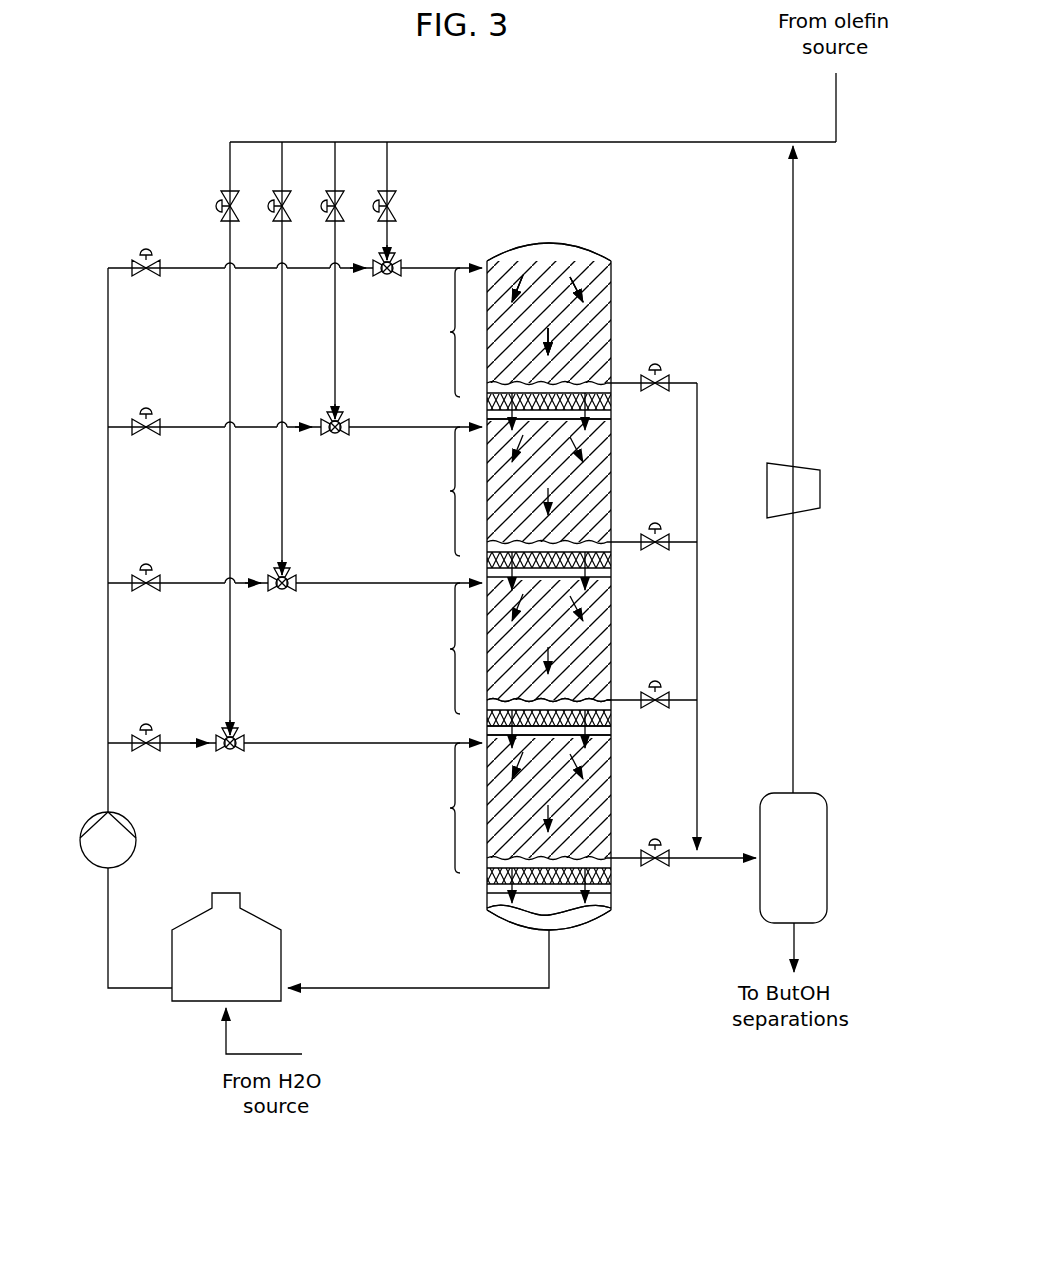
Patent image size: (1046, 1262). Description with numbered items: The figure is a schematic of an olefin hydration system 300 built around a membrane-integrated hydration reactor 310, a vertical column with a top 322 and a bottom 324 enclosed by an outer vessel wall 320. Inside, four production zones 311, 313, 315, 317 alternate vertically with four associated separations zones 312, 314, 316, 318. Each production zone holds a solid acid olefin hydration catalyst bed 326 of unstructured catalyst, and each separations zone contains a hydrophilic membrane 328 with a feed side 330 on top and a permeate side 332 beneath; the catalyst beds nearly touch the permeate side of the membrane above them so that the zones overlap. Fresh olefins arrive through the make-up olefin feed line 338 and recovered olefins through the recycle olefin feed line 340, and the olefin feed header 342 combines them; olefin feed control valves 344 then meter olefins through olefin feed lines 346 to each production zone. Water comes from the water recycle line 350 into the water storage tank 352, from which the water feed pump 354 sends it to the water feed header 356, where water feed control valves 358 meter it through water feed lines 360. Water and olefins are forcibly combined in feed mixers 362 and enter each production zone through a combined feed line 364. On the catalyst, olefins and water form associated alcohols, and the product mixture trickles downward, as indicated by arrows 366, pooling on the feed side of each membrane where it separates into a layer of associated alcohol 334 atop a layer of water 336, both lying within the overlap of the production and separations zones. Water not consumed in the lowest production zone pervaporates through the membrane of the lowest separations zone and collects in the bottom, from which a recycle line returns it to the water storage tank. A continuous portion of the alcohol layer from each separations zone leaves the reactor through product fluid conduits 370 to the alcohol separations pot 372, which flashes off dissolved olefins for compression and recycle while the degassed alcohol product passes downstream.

The olefin hydration system 300 is at (630, 1012).
The membrane-integrated hydration reactor 310 is at (636, 254).
The production zone 311 is at (450, 332).
The separations zone 312 is at (615, 390).
The production zone 313 is at (450, 491).
The separations zone 314 is at (615, 549).
The production zone 315 is at (450, 649).
The separations zone 316 is at (615, 707).
The production zone 317 is at (450, 808).
The separations zone 318 is at (615, 865).
The outer vessel wall 320 is at (487, 912).
The top 322 is at (563, 247).
The bottom 324 is at (598, 928).
The solid acid olefin hydration catalyst bed 326 is at (590, 640).
The hydrophilic membrane 328 is at (487, 724).
The feed side 330 is at (604, 700).
The permeate side 332 is at (593, 738).
The layer of associated alcohol 334 is at (602, 383).
The layer of water 336 is at (600, 422).
The make-up olefin feed line 338 is at (832, 96).
The recycle olefin feed line 340 is at (795, 246).
The olefin feed header 342 is at (470, 142).
The olefin feed control valves 344 is at (278, 190).
The olefin feed lines 346 is at (333, 336).
The water recycle line 350 is at (280, 1054).
The water storage tank 352 is at (245, 975).
The water feed pump 354 is at (132, 828).
The water feed header 356 is at (106, 350).
The water feed control valves 358 is at (148, 412).
The water feed lines 360 is at (212, 430).
The feed mixers 362 is at (285, 592).
The combined feed line 364 is at (365, 427).
The arrows 366 is at (552, 340).
The product fluid conduits 370 is at (699, 440).
The alcohol separations pot 372 is at (822, 882).